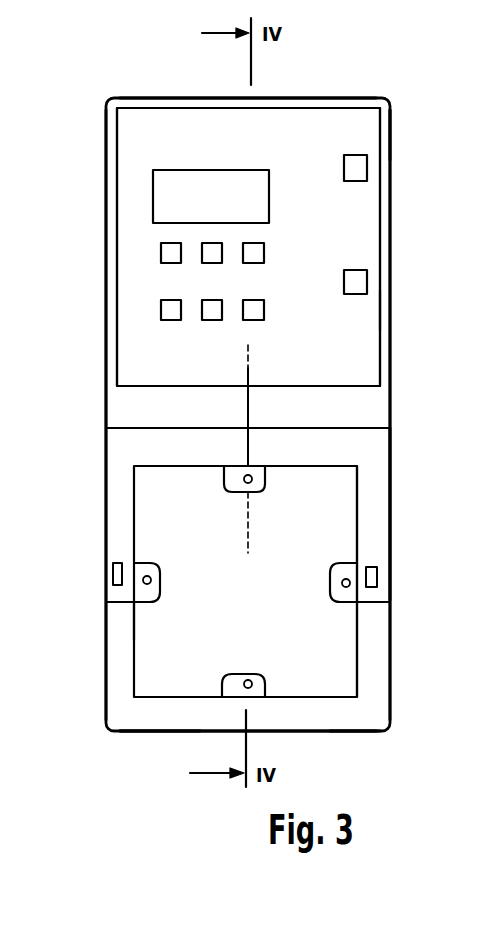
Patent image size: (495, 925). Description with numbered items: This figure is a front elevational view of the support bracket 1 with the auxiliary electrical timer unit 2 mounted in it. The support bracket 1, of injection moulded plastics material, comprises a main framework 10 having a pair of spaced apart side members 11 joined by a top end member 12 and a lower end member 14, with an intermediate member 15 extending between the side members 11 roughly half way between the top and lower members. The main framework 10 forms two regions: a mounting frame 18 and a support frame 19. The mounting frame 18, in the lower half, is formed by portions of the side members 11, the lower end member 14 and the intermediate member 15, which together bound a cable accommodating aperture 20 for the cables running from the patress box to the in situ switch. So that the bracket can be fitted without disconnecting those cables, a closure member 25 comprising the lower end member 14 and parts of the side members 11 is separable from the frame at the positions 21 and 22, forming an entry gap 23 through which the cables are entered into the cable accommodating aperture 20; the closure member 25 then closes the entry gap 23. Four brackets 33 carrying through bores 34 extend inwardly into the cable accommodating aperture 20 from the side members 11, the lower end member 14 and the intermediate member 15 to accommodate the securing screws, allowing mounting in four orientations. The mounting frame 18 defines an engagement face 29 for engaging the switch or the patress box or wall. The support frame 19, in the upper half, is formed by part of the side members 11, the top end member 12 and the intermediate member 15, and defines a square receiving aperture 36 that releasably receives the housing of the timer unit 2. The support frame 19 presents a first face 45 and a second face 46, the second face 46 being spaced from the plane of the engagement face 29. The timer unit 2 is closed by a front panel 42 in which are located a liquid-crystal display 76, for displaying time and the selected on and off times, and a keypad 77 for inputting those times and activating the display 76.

The support bracket 1 is at (420, 85).
The electrical timer unit 2 is at (138, 338).
The main framework 10 is at (186, 97).
The side members 11 is at (105, 218).
The top end member 12 is at (148, 99).
The lower end member 14 is at (300, 727).
The intermediate member 15 is at (335, 428).
The mounting frame 18 is at (384, 500).
The support frame 19 is at (390, 277).
The cable accommodating aperture 20 is at (150, 656).
The separation position 21 is at (106, 604).
The separation position 22 is at (370, 608).
The entry gap 23 is at (135, 607).
The closure member 25 is at (167, 716).
The engagement face 29 is at (382, 466).
The brackets 33 is at (265, 482).
The through bores 34 is at (253, 483).
The receiving aperture 36 is at (391, 311).
The front panel 42 is at (320, 118).
The first face 45 is at (391, 184).
The second face 46 is at (392, 137).
The liquid-crystal display 76 is at (216, 187).
The keypad 77 is at (138, 284).